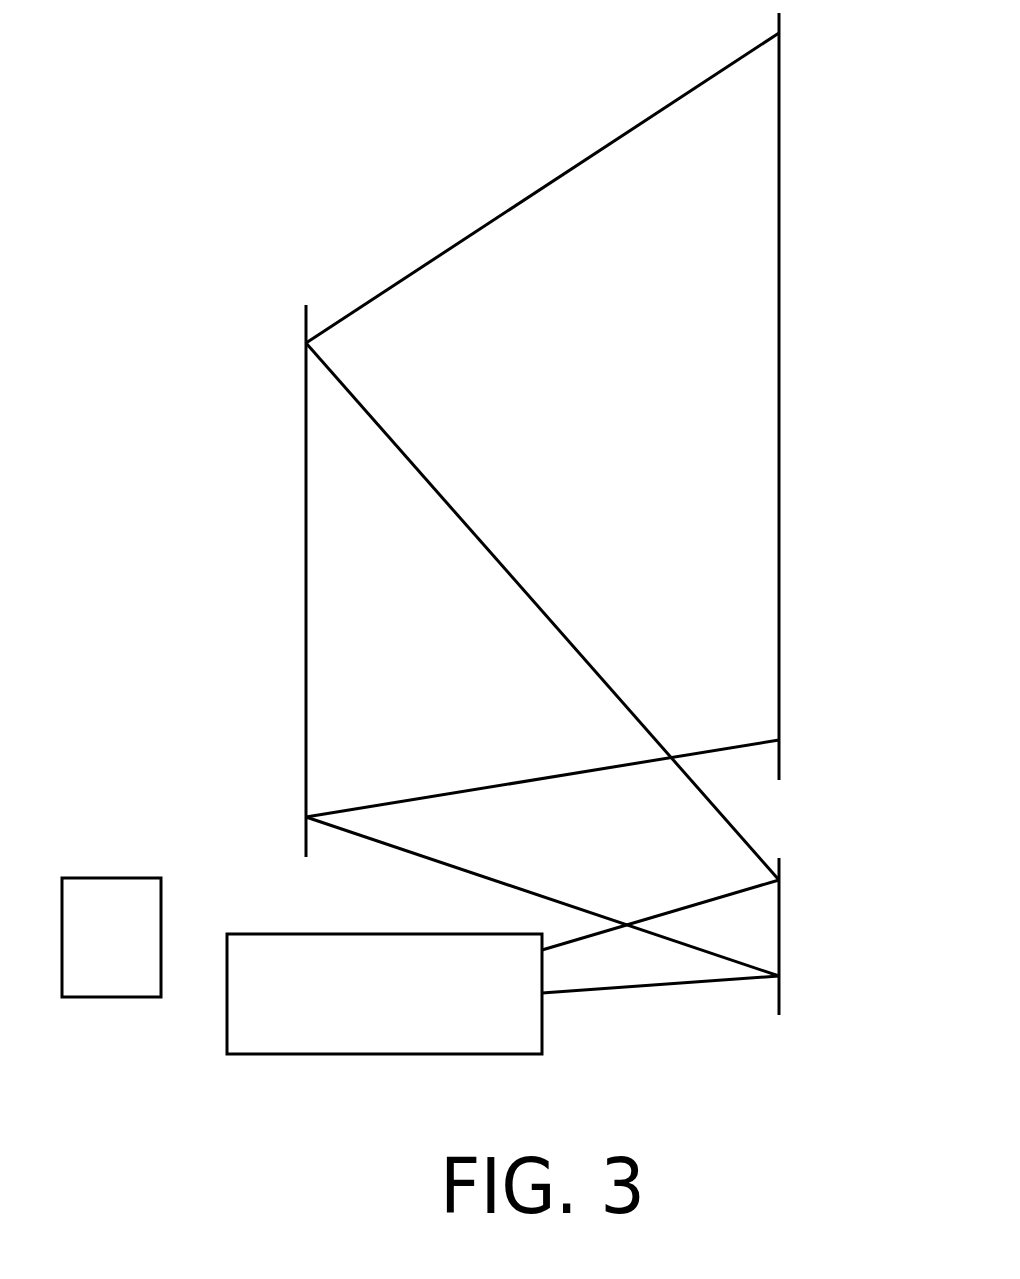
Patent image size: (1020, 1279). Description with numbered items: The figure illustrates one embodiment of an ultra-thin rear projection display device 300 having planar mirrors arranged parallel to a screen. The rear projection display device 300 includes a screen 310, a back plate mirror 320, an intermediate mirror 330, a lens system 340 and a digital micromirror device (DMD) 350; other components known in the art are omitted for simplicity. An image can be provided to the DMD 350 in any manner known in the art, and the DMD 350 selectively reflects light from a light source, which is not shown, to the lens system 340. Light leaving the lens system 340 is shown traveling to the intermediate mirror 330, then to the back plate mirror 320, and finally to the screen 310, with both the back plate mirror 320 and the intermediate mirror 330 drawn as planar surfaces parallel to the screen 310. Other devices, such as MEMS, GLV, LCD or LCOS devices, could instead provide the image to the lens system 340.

The rear projection display device 300 is at (268, 109).
The screen 310 is at (779, 425).
The back plate mirror 320 is at (306, 543).
The intermediate mirror 330 is at (779, 936).
The lens system 340 is at (530, 1037).
The digital micromirror device (DMD) 350 is at (129, 999).